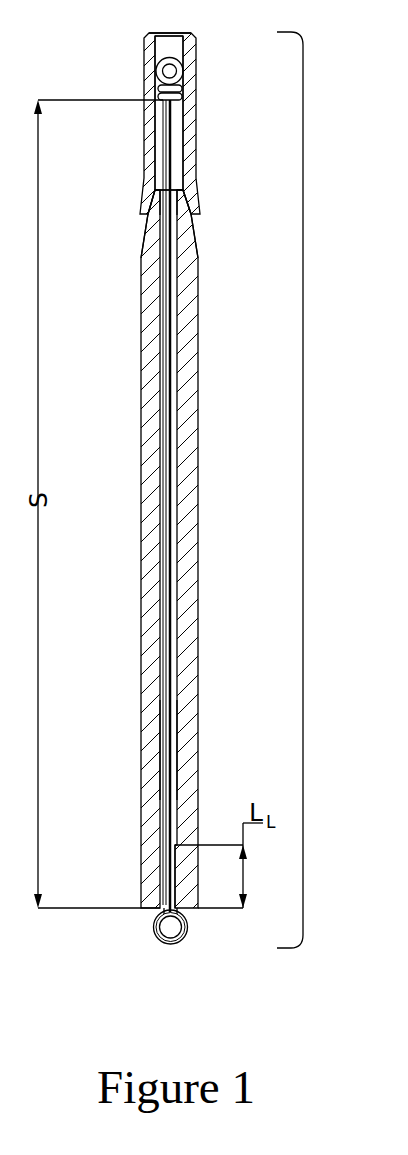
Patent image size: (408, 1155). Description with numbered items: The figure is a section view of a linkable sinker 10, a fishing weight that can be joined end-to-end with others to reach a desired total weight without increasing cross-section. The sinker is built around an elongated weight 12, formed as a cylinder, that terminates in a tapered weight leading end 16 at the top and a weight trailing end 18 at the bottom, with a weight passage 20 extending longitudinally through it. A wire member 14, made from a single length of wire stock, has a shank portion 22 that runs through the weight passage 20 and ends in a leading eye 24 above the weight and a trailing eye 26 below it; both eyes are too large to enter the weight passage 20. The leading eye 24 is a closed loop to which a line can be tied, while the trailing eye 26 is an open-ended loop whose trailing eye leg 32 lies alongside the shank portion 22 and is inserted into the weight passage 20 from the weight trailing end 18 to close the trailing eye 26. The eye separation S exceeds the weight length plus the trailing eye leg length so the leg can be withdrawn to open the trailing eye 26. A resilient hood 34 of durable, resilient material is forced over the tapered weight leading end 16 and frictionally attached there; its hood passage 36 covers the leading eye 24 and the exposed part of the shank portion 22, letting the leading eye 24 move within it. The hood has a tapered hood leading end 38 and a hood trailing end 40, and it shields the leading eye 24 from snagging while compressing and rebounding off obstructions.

The linkable sinker 10 is at (303, 491).
The elongated weight 12 is at (203, 357).
The wire member 14 is at (173, 688).
The weight leading end 16 is at (187, 225).
The weight trailing end 18 is at (150, 902).
The weight passage 20 is at (175, 758).
The shank portion 22 is at (167, 585).
The leading eye 24 is at (160, 72).
The trailing eye 26 is at (154, 935).
The trailing eye leg 32 is at (180, 892).
The resilient hood 34 is at (204, 110).
The hood passage 36 is at (173, 47).
The hood leading end 38 is at (188, 42).
The hood trailing end 40 is at (178, 210).